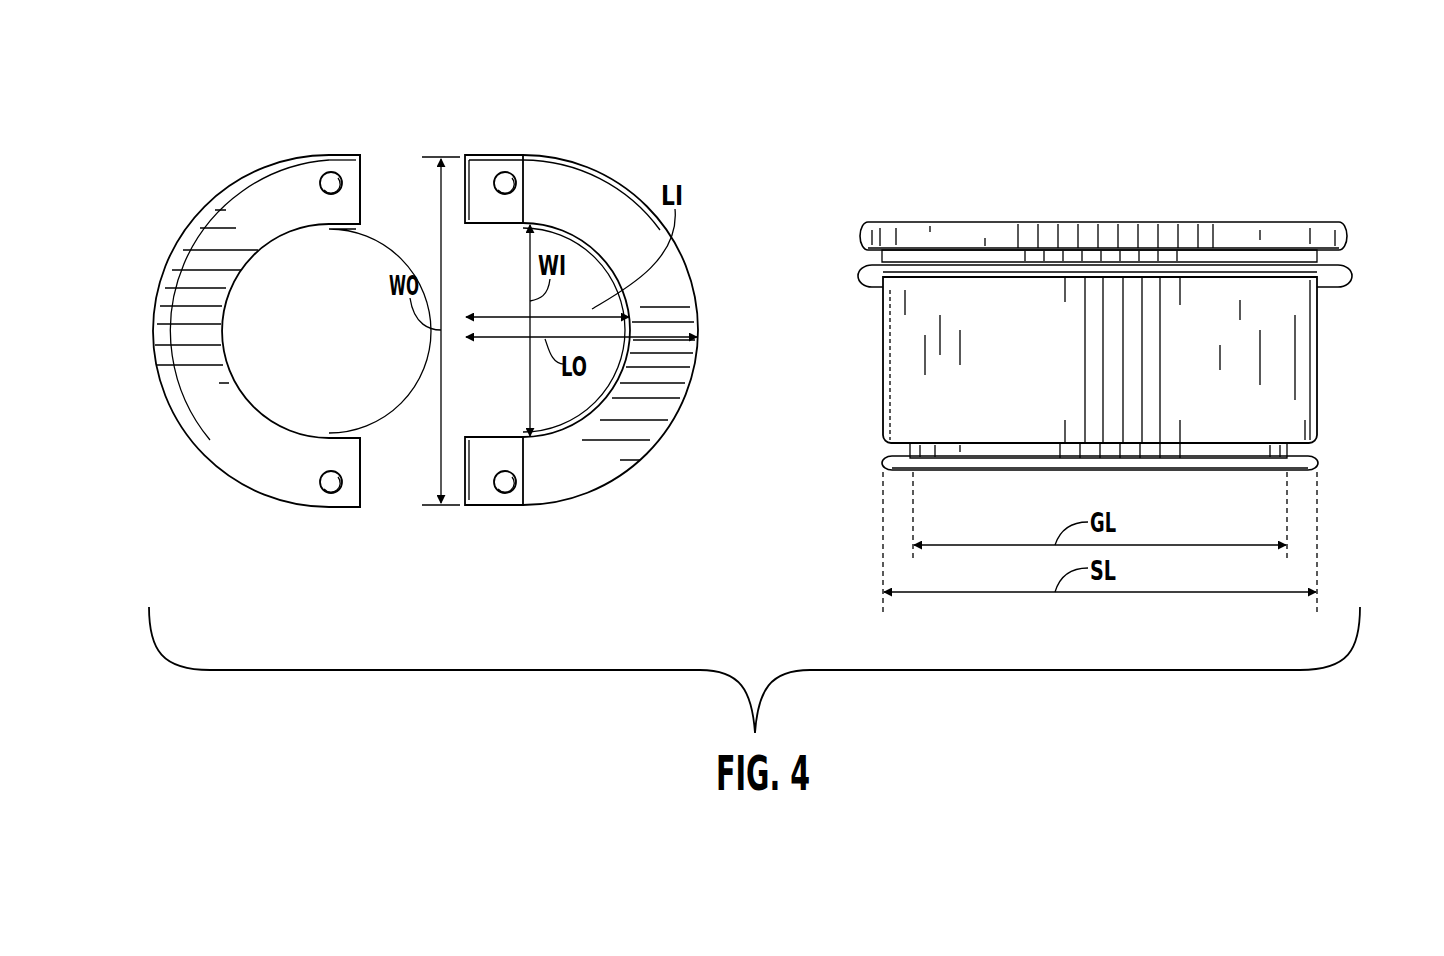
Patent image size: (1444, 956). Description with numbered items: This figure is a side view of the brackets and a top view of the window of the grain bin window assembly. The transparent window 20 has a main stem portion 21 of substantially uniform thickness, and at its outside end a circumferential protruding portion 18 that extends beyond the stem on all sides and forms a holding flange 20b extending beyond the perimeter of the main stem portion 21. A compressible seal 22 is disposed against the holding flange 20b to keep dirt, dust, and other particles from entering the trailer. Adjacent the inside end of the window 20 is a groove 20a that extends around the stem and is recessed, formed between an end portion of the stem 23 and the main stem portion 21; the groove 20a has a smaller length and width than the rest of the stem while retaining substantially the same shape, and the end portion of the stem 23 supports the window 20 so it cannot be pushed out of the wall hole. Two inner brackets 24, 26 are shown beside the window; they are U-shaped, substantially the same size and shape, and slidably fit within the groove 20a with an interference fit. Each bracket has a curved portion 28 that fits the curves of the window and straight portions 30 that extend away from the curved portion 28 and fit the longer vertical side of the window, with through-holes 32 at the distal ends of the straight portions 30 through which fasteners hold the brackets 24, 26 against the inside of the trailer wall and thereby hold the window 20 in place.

The circumferential protruding portion 18 is at (977, 233).
The transparent window 20 is at (1306, 350).
The groove 20a is at (1317, 449).
The holding flange 20b is at (1350, 255).
The main stem portion 21 is at (925, 380).
The compressible seal 22 is at (917, 266).
The end portion of the stem 23 is at (1140, 470).
The inner bracket 24 is at (593, 466).
The inner bracket 26 is at (233, 458).
The curved portion 28 is at (165, 341).
The straight portion 30 is at (350, 208).
The through-hole 32 is at (328, 173).